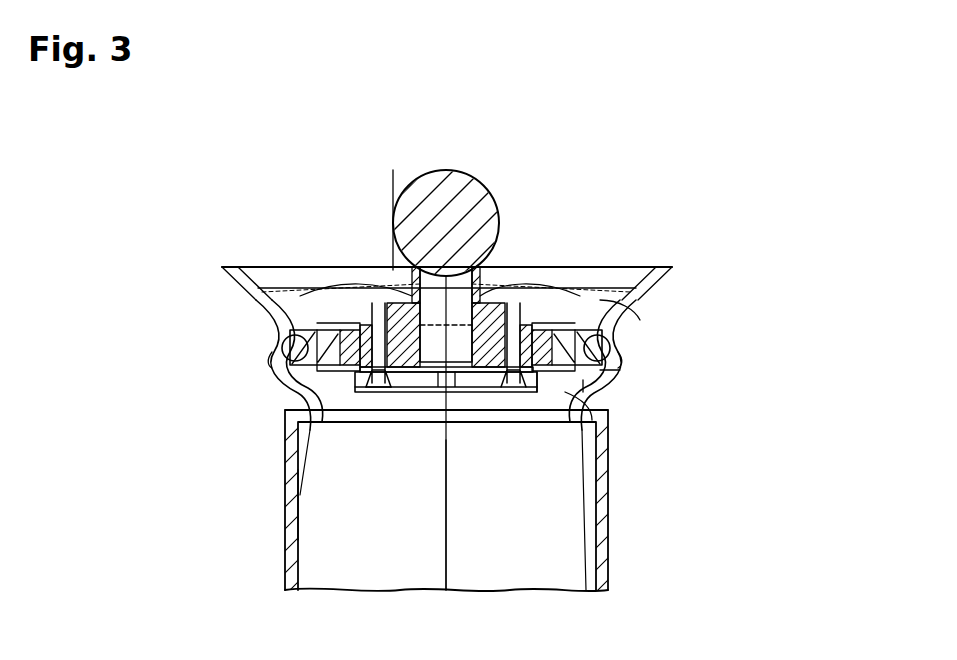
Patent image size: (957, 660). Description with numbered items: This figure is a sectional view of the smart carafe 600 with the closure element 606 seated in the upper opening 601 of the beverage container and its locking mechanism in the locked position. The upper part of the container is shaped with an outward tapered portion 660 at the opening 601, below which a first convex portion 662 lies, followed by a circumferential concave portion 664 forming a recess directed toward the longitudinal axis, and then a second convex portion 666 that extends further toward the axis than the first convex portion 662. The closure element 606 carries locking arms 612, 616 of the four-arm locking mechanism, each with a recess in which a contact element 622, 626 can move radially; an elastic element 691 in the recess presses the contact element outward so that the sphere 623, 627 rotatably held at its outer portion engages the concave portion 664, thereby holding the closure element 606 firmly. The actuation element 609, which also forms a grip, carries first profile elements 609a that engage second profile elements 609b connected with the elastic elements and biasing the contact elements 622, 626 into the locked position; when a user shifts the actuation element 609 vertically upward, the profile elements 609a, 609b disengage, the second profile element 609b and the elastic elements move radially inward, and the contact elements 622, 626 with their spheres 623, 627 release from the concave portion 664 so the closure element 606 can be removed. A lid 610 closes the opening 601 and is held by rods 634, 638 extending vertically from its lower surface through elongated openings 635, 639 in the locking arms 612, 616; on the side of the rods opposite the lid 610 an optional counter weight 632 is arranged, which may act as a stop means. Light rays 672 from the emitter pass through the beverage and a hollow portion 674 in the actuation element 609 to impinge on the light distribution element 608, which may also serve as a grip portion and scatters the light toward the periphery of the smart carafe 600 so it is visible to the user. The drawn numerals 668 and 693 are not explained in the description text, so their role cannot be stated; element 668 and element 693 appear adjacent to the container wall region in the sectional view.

The smart carafe 600 is at (762, 176).
The upper opening 601 is at (282, 152).
The closure element 606 is at (392, 157).
The light distribution element 608 is at (448, 192).
The actuation element 609 is at (485, 297).
The first profile elements 609a is at (510, 298).
The second profile elements 609b is at (612, 298).
The lid 610 is at (590, 300).
The locking arm 612 is at (312, 395).
The locking arm 616 is at (605, 578).
The contact element 622 is at (272, 368).
The sphere 623 is at (288, 348).
The contact element 626 is at (585, 400).
The sphere 627 is at (580, 395).
The counter weight 632 is at (423, 387).
The rod 634 is at (348, 355).
The opening 635 is at (302, 312).
The rod 638 is at (557, 372).
The opening 639 is at (590, 312).
The outward tapered portion 660 is at (620, 305).
The first convex portion 662 is at (604, 348).
The concave portion 664 is at (618, 368).
The second convex portion 666 is at (575, 400).
The housing wall 668 is at (605, 512).
The light rays 672 is at (447, 507).
The hollow portion 674 is at (396, 277).
The elastic element 691 is at (367, 383).
The housing edge 693 is at (578, 383).